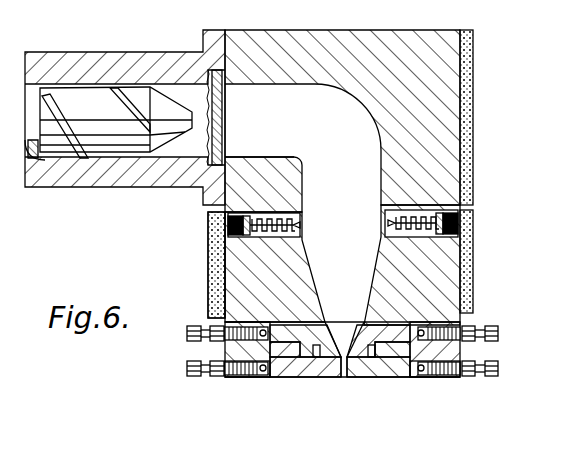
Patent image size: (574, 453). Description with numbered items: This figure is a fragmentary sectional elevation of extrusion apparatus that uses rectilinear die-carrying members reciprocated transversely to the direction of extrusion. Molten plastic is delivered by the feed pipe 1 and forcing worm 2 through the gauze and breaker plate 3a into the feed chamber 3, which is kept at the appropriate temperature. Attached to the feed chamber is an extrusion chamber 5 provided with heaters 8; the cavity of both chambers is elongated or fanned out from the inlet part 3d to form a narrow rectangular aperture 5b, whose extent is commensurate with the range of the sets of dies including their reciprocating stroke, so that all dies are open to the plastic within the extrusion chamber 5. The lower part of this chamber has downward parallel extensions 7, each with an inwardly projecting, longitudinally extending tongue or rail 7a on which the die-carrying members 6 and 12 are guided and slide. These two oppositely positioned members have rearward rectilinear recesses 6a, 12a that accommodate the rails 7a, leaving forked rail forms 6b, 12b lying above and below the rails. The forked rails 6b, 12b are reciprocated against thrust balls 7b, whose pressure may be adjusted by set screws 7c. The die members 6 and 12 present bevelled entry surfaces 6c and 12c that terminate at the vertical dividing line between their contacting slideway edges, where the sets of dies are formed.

The feed pipe 1 is at (125, 172).
The forcing worm 2 is at (100, 98).
The feed chamber 3 is at (402, 112).
The gauze and breaker plate 3a is at (226, 127).
The inlet part 3d is at (250, 146).
The extrusion chamber 5 is at (442, 250).
The narrow rectangular aperture 5b is at (322, 325).
The die-carrying member 6 is at (349, 370).
The rearward rectilinear recess 6a is at (360, 362).
The forked rail form 6b is at (400, 322).
The bevelled entry surface 6c is at (355, 330).
The downward parallel extension 7 is at (245, 353).
The tongue or rail 7a is at (298, 353).
The thrust ball 7b is at (224, 300).
The set screw 7c is at (472, 310).
The heater 8 is at (474, 213).
The die-carrying member 12 is at (337, 372).
The rearward rectilinear recess 12a is at (318, 357).
The forked rail form 12b is at (270, 325).
The bevelled entry surface 12c is at (332, 328).